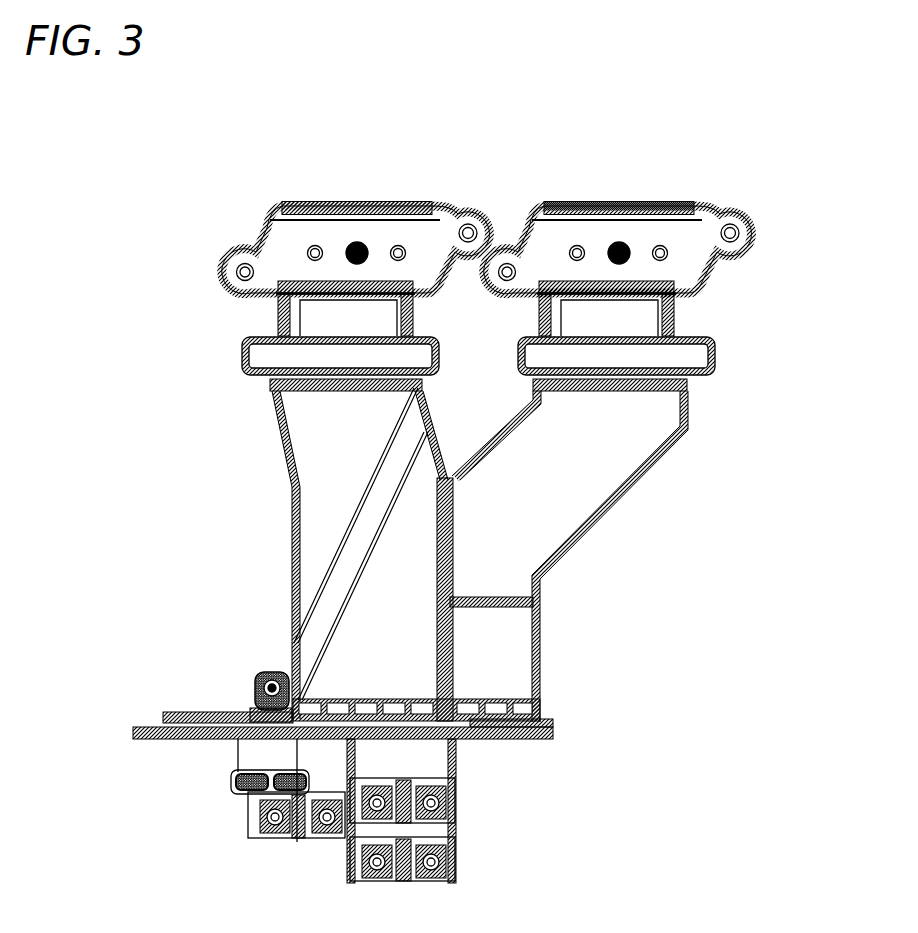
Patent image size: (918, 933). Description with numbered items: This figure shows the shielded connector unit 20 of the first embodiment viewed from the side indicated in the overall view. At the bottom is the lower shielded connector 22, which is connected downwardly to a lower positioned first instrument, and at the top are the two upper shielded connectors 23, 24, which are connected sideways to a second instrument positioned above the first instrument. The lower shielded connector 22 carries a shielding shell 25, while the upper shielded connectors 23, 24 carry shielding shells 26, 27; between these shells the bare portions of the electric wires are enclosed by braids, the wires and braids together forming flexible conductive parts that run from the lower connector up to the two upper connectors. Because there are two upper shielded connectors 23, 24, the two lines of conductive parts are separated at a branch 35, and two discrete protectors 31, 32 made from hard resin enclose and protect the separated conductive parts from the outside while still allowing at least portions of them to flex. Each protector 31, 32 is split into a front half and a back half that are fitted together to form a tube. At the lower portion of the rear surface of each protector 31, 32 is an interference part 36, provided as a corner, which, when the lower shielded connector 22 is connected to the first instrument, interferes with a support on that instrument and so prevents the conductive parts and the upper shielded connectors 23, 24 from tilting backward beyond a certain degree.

The shielded connector unit 20 is at (710, 403).
The lower shielded connector 22 is at (521, 750).
The upper shielded connector 23 is at (617, 196).
The upper shielded connector 24 is at (362, 198).
The shielding shell 25 is at (555, 736).
The shielding shell 26 is at (650, 218).
The shielding shell 27 is at (318, 212).
The protector 31 is at (597, 488).
The protector 32 is at (317, 462).
The branch 35 is at (450, 461).
The interference part 36 is at (343, 700).